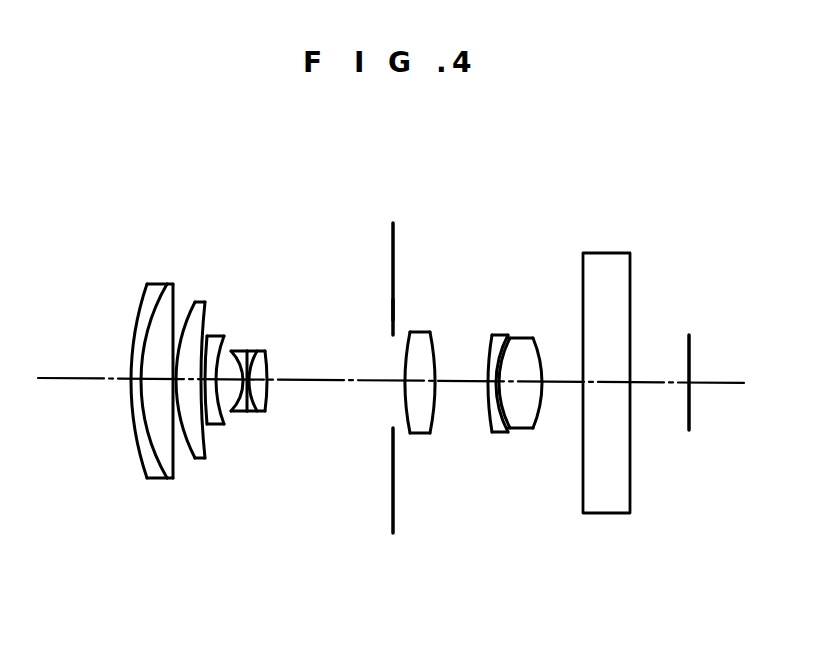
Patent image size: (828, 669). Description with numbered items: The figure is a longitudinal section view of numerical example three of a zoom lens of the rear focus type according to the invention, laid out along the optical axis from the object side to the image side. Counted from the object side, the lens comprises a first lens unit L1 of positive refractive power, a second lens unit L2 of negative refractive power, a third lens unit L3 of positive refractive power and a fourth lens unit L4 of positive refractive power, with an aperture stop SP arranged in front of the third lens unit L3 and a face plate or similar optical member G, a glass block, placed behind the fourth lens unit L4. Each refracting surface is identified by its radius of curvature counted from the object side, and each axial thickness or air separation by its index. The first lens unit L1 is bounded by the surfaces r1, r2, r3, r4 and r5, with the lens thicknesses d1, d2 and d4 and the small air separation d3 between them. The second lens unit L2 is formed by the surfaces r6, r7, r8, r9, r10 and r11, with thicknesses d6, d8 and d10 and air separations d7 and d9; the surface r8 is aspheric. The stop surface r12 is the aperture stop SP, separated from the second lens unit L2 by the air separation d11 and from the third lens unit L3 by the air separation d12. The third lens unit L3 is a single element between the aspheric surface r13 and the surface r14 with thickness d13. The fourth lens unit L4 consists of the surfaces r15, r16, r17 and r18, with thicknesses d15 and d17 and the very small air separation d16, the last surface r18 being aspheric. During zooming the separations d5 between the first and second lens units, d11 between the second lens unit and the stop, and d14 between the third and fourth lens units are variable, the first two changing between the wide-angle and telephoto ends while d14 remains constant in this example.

The first lens unit L1 is at (192, 150).
The second lens unit L2 is at (343, 150).
The third lens unit L3 is at (487, 227).
The fourth lens unit L4 is at (590, 170).
The aperture stop SP is at (388, 333).
The face plate G is at (611, 252).
The first lens surface r1 is at (130, 346).
The second lens surface r2 is at (140, 340).
The third lens surface r3 is at (163, 285).
The fourth lens surface r4 is at (198, 300).
The fifth lens surface r5 is at (209, 312).
The sixth lens surface r6 is at (208, 340).
The seventh lens surface r7 is at (226, 340).
The eighth lens surface r8 is at (245, 351).
The ninth lens surface r9 is at (258, 351).
The tenth lens surface r10 is at (262, 352).
The eleventh lens surface r11 is at (270, 358).
The stop surface r12 is at (393, 275).
The thirteenth lens surface r13 is at (405, 342).
The fourteenth lens surface r14 is at (436, 363).
The fifteenth lens surface r15 is at (490, 357).
The sixteenth lens surface r16 is at (494, 338).
The seventeenth lens surface r17 is at (536, 352).
The eighteenth lens surface r18 is at (542, 358).
The first lens thickness d1 is at (142, 396).
The second lens thickness d2 is at (164, 398).
The third air separation d3 is at (183, 445).
The fourth lens thickness d4 is at (194, 452).
The fifth air separation d5 is at (207, 432).
The sixth lens thickness d6 is at (218, 424).
The seventh air separation d7 is at (228, 414).
The eighth lens thickness d8 is at (237, 413).
The ninth air separation d9 is at (249, 413).
The tenth lens thickness d10 is at (256, 412).
The eleventh air separation d11 is at (333, 383).
The twelfth air separation d12 is at (399, 400).
The thirteenth lens thickness d13 is at (417, 425).
The fourteenth air separation d14 is at (453, 400).
The fifteenth lens thickness d15 is at (487, 420).
The sixteenth air separation d16 is at (522, 427).
The seventeenth lens thickness d17 is at (534, 427).